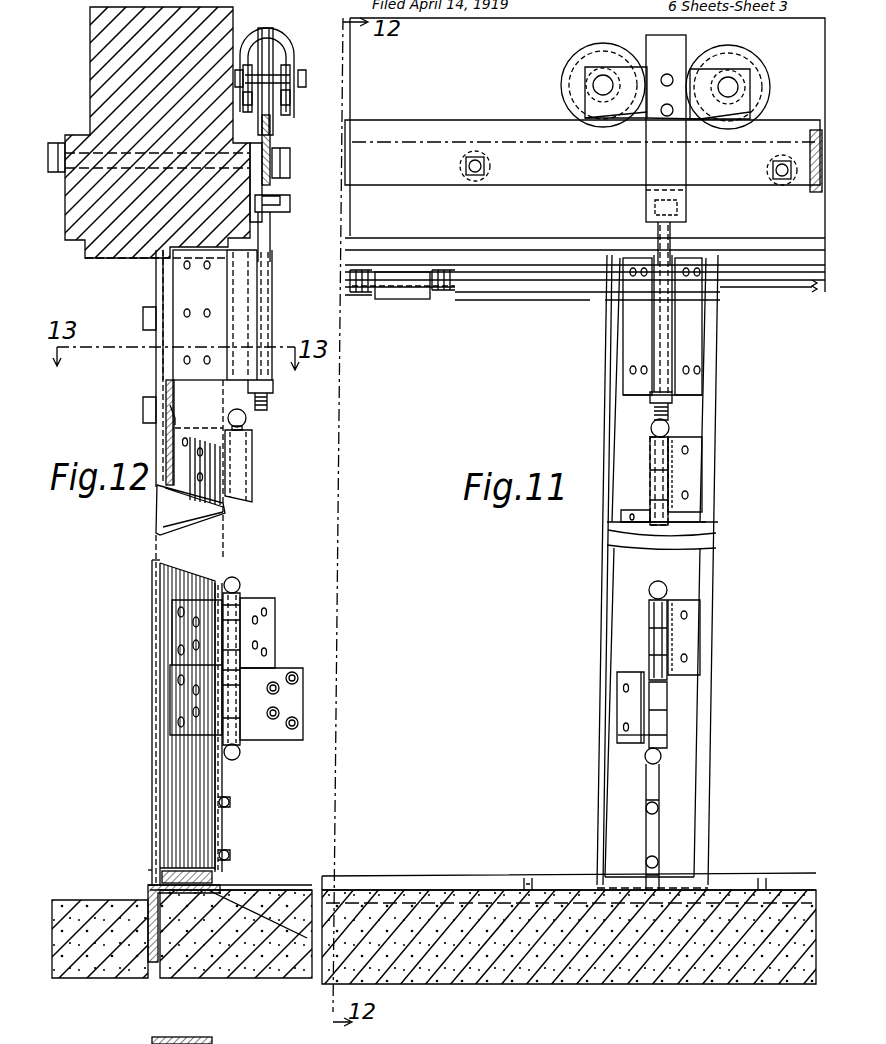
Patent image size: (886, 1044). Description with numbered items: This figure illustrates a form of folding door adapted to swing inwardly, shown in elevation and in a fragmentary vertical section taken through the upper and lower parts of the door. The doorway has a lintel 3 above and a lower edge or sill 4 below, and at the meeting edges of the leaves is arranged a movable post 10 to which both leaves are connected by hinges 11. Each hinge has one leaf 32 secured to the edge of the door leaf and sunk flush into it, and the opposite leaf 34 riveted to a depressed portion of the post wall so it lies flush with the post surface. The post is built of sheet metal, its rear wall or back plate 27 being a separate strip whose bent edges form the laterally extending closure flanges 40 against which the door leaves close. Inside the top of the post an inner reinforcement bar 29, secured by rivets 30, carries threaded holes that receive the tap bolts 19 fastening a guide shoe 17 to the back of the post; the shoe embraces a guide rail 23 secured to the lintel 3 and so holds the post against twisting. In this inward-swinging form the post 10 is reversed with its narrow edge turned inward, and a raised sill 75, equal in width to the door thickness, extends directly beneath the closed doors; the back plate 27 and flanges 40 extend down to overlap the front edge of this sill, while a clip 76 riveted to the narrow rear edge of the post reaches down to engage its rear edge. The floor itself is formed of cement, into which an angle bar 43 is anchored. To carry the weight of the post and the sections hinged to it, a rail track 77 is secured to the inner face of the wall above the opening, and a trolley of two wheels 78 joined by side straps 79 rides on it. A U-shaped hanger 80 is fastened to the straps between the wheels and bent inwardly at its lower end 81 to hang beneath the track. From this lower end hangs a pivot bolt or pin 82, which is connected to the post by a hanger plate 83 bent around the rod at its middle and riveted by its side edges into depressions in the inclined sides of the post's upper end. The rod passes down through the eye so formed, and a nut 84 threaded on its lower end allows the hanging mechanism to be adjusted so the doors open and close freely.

In FIG. 11, the lintel 3 is at (485, 232).
In FIG. 12, the lintel 3 is at (207, 222).
In FIG. 11, the sill 4 is at (740, 882).
In FIG. 12, the sill 4 is at (232, 888).
In FIG. 11, the movable post 10 is at (695, 418).
In FIG. 12, the movable post 10 is at (173, 455).
In FIG. 11, the hinges 11 is at (655, 448).
In FIG. 12, the hinges 11 is at (247, 440).
In FIG. 11, the guide bracket or shoe 17 is at (490, 300).
In FIG. 12, the guide bracket or shoe 17 is at (110, 282).
In FIG. 12, the bolts 19 is at (143, 410).
In FIG. 11, the guide rail 23 is at (772, 292).
In FIG. 12, the guide rail 23 is at (143, 282).
In FIG. 12, the rear wall or back plate 27 is at (158, 795).
In FIG. 12, the inner reinforcement plate or bar 29 is at (170, 398).
In FIG. 12, the rivets 30 is at (175, 453).
In FIG. 11, the hinge leaf 32 is at (632, 705).
In FIG. 12, the hinge leaf 32 is at (328, 652).
In FIG. 11, the hinge leaf 34 is at (700, 641).
In FIG. 12, the hinge leaf 34 is at (185, 703).
In FIG. 11, the closure flanges 40 is at (598, 800).
In FIG. 12, the closure flanges 40 is at (156, 818).
In FIG. 12, the angle bar 43 is at (152, 938).
In FIG. 11, the raised sill 75 is at (568, 878).
In FIG. 12, the raised sill 75 is at (167, 870).
In FIG. 11, the clip 76 is at (645, 836).
In FIG. 12, the clip 76 is at (224, 831).
In FIG. 11, the rail track 77 is at (462, 121).
In FIG. 12, the rail track 77 is at (270, 150).
In FIG. 11, the wheels 78 is at (575, 95).
In FIG. 12, the wheels 78 is at (282, 118).
In FIG. 11, the side straps 79 is at (765, 106).
In FIG. 12, the side straps 79 is at (252, 62).
In FIG. 11, the U-shaped hanger 80 is at (640, 36).
In FIG. 12, the U-shaped hanger 80 is at (286, 33).
In FIG. 12, the lower end of hanger 81 is at (280, 214).
In FIG. 11, the pivot bolt or pin 82 is at (672, 239).
In FIG. 12, the pivot bolt or pin 82 is at (273, 238).
In FIG. 11, the hanger plate 83 is at (692, 350).
In FIG. 12, the hanger plate 83 is at (276, 316).
In FIG. 12, the nut 84 is at (275, 389).